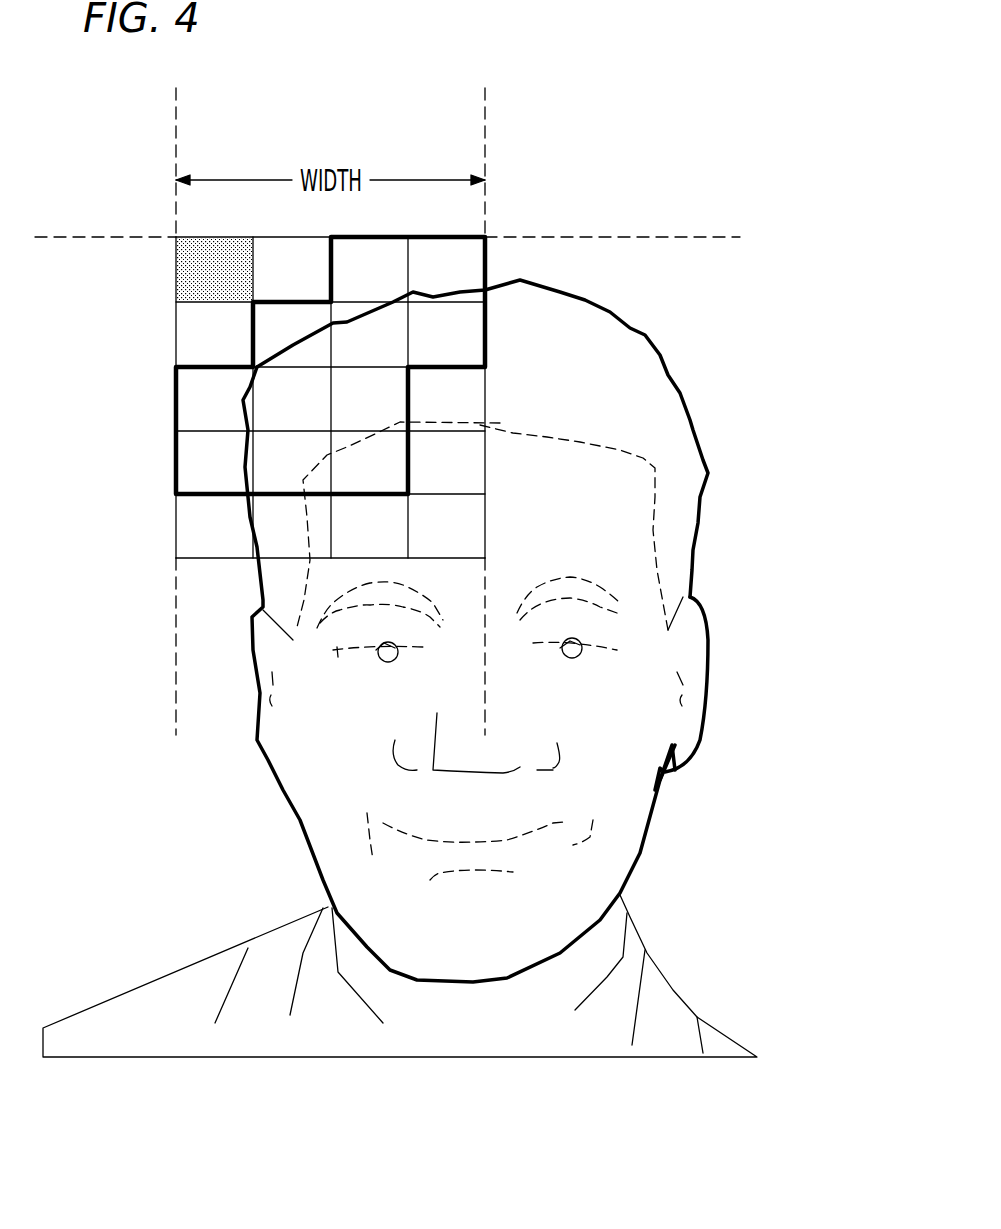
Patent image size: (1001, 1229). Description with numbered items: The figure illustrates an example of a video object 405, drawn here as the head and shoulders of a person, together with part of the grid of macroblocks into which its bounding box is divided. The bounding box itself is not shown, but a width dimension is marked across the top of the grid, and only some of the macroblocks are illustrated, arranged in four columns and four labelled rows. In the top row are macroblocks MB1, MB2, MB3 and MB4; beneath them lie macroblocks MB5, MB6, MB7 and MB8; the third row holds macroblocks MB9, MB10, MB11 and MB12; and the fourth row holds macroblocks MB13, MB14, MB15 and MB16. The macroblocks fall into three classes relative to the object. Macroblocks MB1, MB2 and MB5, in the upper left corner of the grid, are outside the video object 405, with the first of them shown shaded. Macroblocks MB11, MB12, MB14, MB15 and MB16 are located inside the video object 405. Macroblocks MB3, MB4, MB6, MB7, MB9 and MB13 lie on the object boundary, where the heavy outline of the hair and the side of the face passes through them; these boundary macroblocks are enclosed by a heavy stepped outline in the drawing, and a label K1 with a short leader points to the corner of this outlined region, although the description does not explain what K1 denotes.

The video object 405 is at (653, 363).
The macroblock region K1 is at (187, 362).
The macroblock MB1 is at (214, 269).
The macroblock MB2 is at (292, 269).
The macroblock MB3 is at (369, 269).
The macroblock MB4 is at (446, 269).
The macroblock MB5 is at (214, 334).
The macroblock MB6 is at (292, 334).
The macroblock MB7 is at (369, 334).
The macroblock MB8 is at (446, 334).
The macroblock MB9 is at (214, 399).
The macroblock MB10 is at (292, 399).
The macroblock MB11 is at (369, 399).
The macroblock MB12 is at (446, 399).
The macroblock MB13 is at (214, 462).
The macroblock MB14 is at (292, 462).
The macroblock MB15 is at (369, 462).
The macroblock MB16 is at (446, 462).